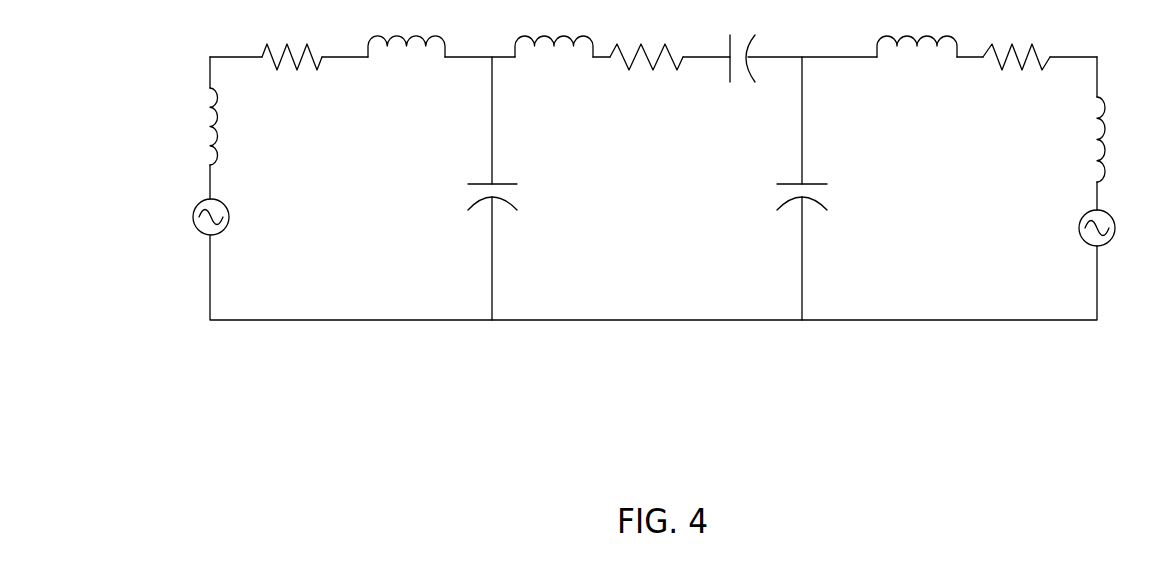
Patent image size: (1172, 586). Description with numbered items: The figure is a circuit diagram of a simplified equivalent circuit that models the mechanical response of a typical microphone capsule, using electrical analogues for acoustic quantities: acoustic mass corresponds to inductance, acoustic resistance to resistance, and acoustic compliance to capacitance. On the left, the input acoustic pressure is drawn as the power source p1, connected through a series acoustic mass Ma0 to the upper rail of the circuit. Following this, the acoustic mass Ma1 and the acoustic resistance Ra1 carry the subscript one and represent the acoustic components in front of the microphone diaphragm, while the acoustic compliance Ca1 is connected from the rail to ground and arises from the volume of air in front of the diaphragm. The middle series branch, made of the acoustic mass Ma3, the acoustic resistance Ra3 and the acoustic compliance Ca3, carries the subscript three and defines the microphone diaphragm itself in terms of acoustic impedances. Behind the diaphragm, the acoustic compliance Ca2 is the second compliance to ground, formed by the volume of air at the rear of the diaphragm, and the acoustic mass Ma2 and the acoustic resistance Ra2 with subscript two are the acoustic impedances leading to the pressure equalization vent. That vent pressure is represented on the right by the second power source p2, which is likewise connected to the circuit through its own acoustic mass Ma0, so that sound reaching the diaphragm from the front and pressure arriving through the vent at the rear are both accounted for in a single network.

The power source p1 (input acoustic pressure) p1 is at (183, 214).
The power source p2 (equalization vent pressure) p2 is at (1124, 227).
The acoustic mass Ma0 is at (657, 135).
The acoustic resistance Ra1 is at (292, 80).
The acoustic mass Ma1 is at (406, 76).
The acoustic compliance Ca1 is at (529, 198).
The acoustic mass Ma3 is at (554, 77).
The acoustic resistance Ra3 is at (647, 81).
The acoustic compliance Ca3 is at (752, 77).
The acoustic mass Ma2 is at (917, 81).
The acoustic resistance Ra2 is at (1016, 85).
The acoustic compliance Ca2 is at (838, 203).